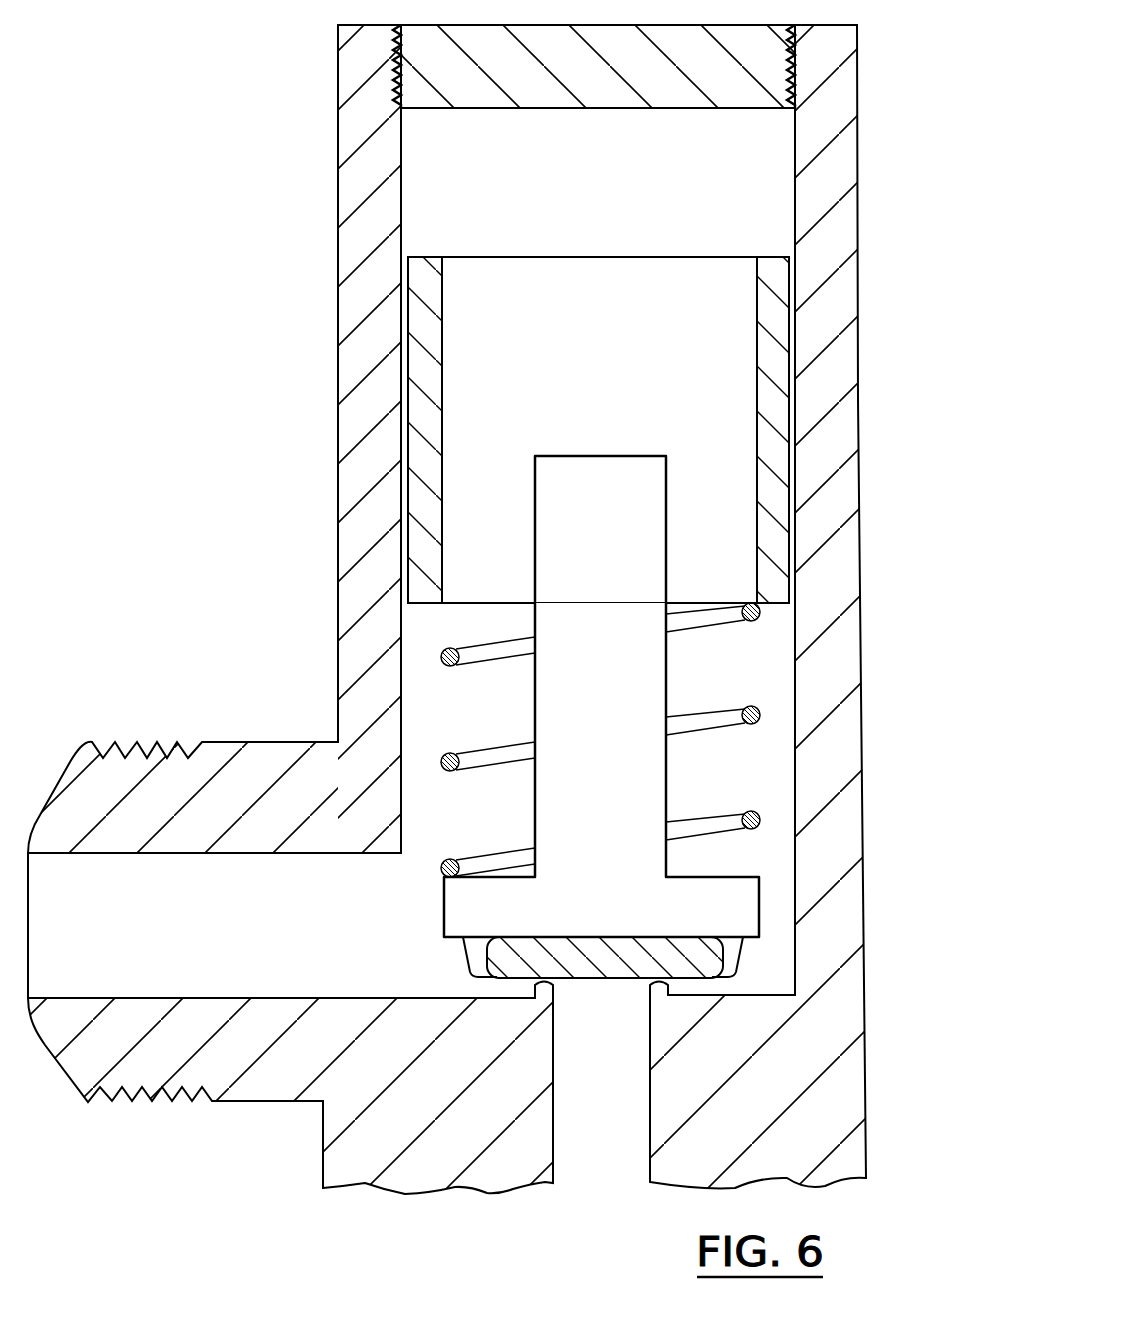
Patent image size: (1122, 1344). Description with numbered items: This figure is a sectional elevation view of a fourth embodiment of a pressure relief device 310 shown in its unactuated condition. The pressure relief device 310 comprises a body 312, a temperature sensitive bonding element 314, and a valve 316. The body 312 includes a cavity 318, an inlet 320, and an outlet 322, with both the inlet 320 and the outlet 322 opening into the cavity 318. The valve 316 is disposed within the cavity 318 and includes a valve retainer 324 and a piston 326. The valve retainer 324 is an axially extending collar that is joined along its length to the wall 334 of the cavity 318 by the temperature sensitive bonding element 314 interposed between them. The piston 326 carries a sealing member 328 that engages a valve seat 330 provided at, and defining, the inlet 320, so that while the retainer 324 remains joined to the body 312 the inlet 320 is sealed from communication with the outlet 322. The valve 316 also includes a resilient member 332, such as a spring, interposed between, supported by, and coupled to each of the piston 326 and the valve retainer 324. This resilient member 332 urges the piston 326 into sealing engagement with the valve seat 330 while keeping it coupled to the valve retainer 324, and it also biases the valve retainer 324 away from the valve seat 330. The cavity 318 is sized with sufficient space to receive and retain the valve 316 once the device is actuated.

The pressure relief device 310 is at (275, 419).
The body 312 is at (368, 332).
The temperature sensitive bonding element 314 is at (410, 240).
The valve 316 is at (642, 320).
The cavity 318 is at (420, 640).
The inlet 320 is at (632, 1125).
The outlet 322 is at (303, 937).
The valve retainer 324 is at (420, 280).
The piston 326 is at (618, 613).
The sealing member 328 is at (612, 980).
The valve seat 330 is at (667, 983).
The resilient member 332 is at (470, 757).
The wall 334 is at (398, 152).